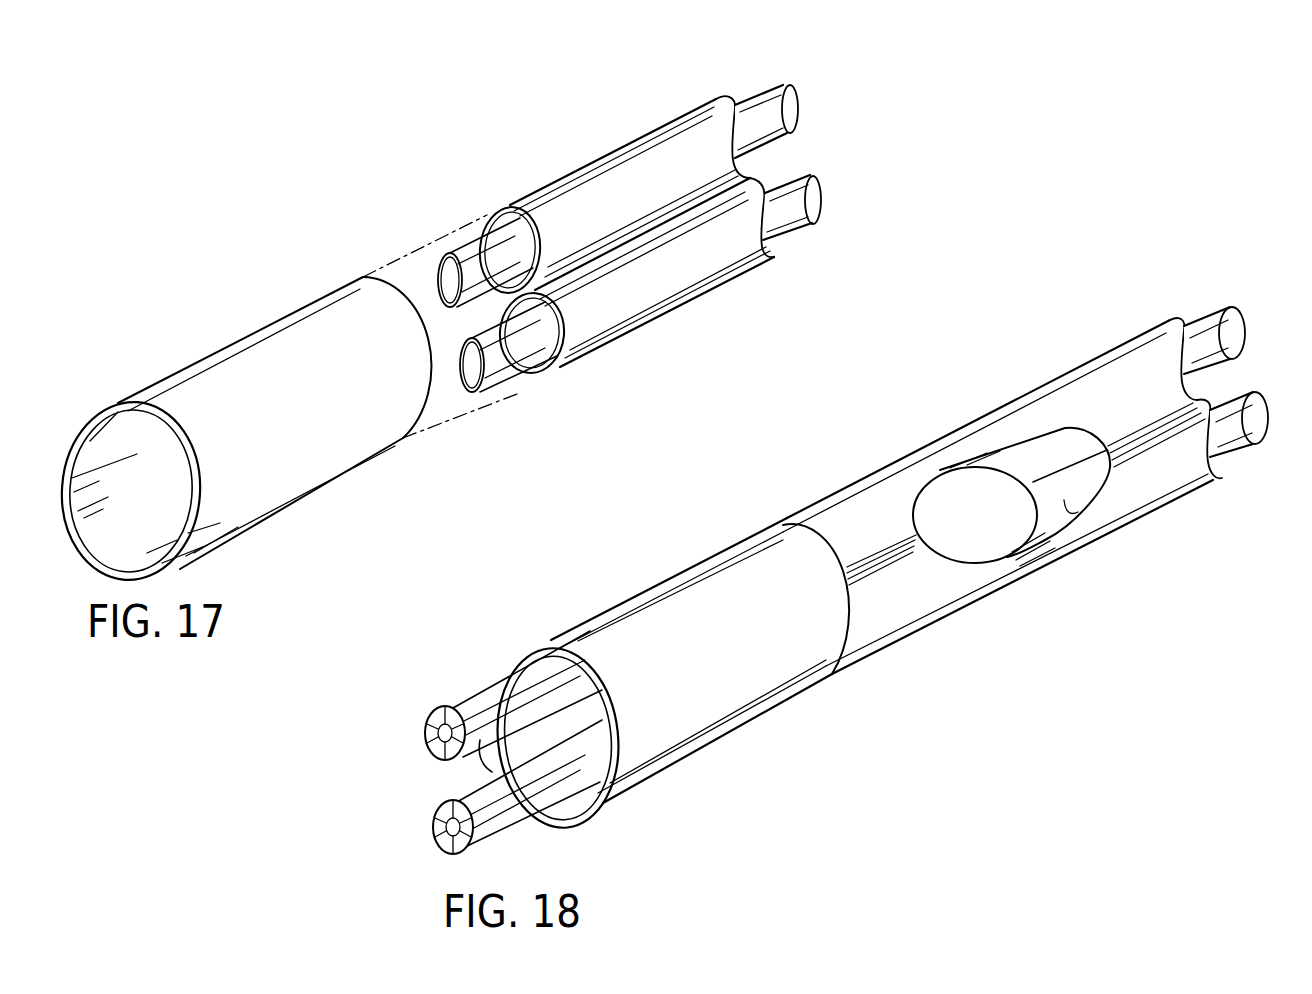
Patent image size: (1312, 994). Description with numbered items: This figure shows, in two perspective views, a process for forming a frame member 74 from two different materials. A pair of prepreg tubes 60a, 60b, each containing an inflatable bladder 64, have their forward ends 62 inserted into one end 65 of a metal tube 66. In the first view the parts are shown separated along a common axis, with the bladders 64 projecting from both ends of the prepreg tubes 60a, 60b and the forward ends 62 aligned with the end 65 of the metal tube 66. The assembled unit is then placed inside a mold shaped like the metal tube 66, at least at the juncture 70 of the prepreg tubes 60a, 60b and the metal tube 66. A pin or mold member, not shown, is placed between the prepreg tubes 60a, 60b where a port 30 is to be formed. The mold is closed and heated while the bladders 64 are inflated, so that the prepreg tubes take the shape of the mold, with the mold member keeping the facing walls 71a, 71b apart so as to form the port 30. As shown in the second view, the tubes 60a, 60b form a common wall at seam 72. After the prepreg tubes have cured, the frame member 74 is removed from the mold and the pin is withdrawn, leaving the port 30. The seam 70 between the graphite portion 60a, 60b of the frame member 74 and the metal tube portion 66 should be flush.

In FIG. 18, the port 30 is at (1080, 510).
In FIG. 17, the prepreg tube 60a is at (630, 151).
In FIG. 18, the prepreg tube 60a is at (873, 471).
In FIG. 17, the prepreg tube 60b is at (673, 303).
In FIG. 18, the prepreg tube 60b is at (1082, 553).
In FIG. 17, the forward end 62 is at (527, 206).
In FIG. 17, the inflatable bladder 64 is at (466, 241).
In FIG. 18, the inflatable bladder 64 is at (472, 694).
In FIG. 17, the end of metal tube 65 is at (388, 280).
In FIG. 17, the metal tube 66 is at (147, 385).
In FIG. 18, the metal tube 66 is at (580, 627).
In FIG. 18, the juncture 70 is at (793, 525).
In FIG. 18, the facing wall 71a is at (1067, 500).
In FIG. 18, the facing wall 71b is at (1047, 440).
In FIG. 18, the seam 72 is at (1137, 427).
In FIG. 18, the frame member 74 is at (697, 528).